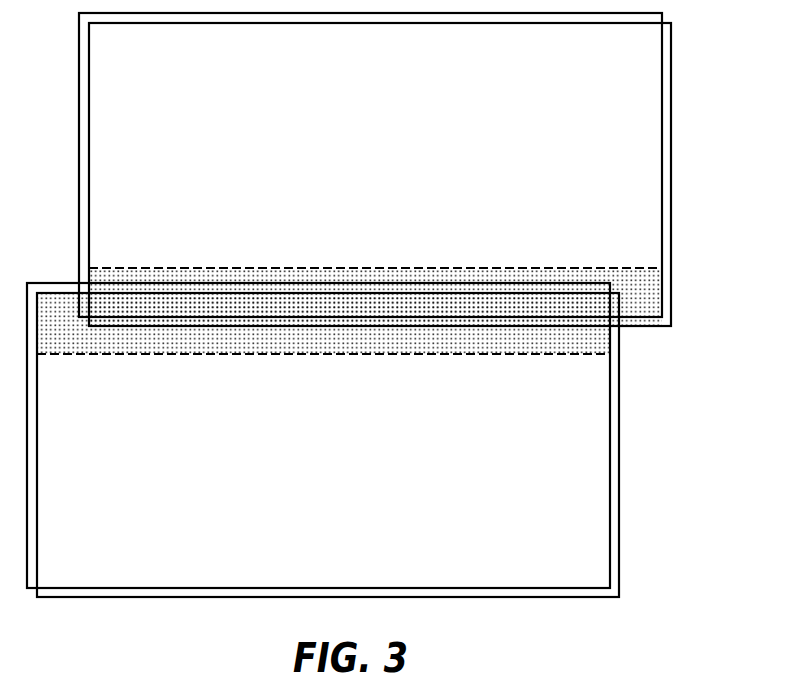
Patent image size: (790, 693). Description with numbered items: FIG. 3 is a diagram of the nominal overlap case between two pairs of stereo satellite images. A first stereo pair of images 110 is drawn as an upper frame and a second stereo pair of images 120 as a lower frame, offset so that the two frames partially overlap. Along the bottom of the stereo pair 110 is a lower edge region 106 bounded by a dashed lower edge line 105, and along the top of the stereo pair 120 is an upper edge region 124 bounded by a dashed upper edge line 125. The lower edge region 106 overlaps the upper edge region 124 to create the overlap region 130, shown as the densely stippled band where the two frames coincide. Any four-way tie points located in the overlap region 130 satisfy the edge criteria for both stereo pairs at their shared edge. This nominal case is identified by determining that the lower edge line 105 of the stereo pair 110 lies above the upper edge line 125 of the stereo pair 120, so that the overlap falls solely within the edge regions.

The lower edge line 105 is at (374, 267).
The lower edge region 106 is at (645, 293).
The first stereo pair of images 110 is at (452, 148).
The second stereo pair of images 120 is at (402, 471).
The upper edge region 124 is at (593, 343).
The upper edge line 125 is at (325, 355).
The overlap region 130 is at (125, 300).